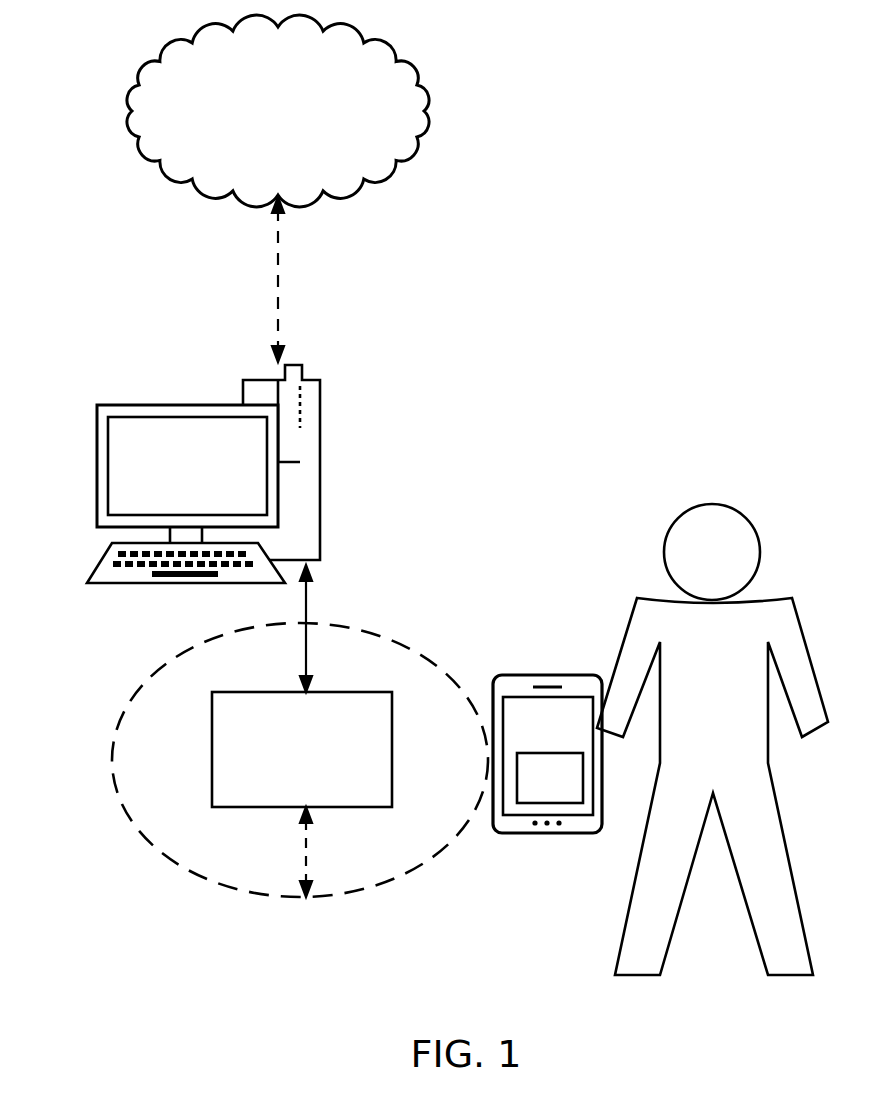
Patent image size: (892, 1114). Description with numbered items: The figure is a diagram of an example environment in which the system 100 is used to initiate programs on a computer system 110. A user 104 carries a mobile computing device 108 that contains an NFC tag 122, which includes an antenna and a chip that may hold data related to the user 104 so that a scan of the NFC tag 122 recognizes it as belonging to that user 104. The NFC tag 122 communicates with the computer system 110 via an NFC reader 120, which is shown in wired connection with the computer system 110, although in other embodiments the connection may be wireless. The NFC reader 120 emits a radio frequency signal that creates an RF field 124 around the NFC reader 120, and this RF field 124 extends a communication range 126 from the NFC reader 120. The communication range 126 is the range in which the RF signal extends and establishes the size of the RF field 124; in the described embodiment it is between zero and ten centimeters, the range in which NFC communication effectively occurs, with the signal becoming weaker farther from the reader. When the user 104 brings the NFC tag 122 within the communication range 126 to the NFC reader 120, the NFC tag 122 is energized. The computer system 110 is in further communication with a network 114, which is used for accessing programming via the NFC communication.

The system 100 is at (693, 103).
The user 104 is at (668, 522).
The mobile computing device 108 is at (562, 675).
The computer system 110 is at (125, 405).
The network 114 is at (278, 111).
The NFC reader 120 is at (258, 692).
The NFC tag 122 is at (550, 778).
The RF field 124 is at (112, 745).
The communication range 126 is at (305, 853).